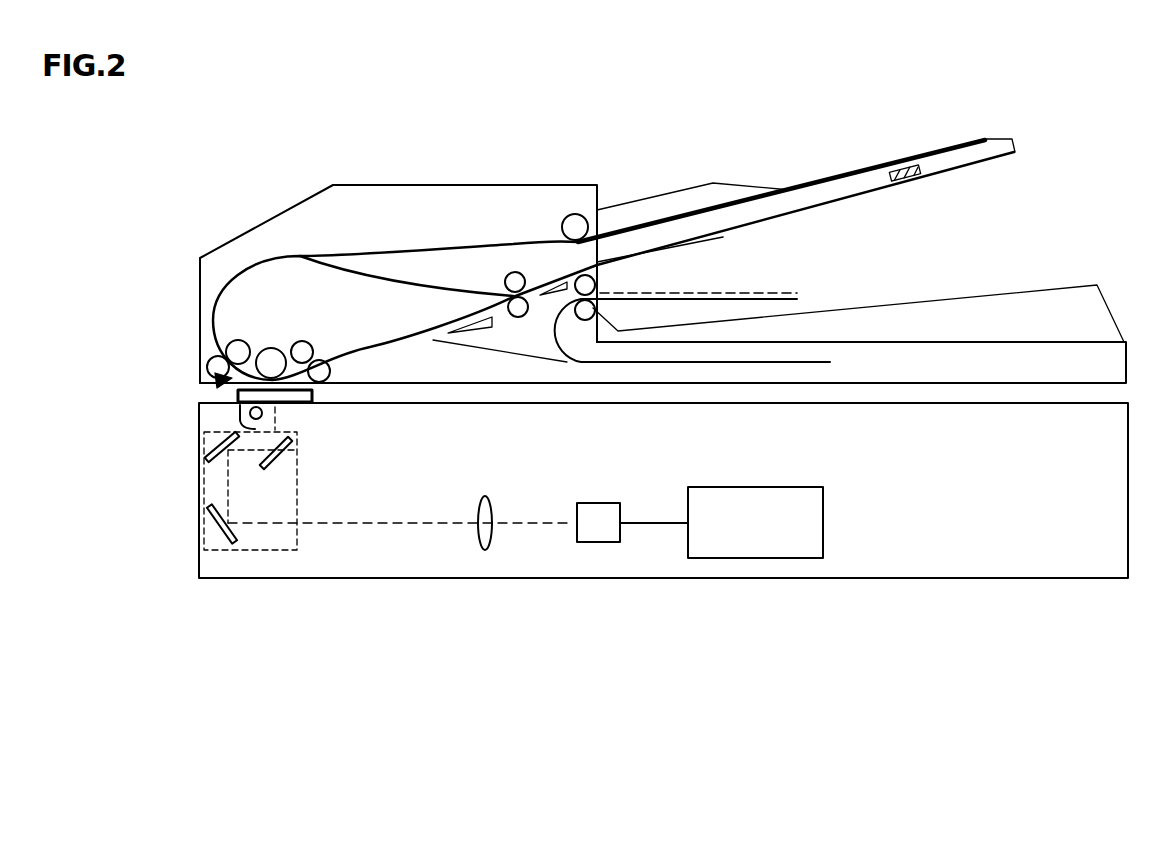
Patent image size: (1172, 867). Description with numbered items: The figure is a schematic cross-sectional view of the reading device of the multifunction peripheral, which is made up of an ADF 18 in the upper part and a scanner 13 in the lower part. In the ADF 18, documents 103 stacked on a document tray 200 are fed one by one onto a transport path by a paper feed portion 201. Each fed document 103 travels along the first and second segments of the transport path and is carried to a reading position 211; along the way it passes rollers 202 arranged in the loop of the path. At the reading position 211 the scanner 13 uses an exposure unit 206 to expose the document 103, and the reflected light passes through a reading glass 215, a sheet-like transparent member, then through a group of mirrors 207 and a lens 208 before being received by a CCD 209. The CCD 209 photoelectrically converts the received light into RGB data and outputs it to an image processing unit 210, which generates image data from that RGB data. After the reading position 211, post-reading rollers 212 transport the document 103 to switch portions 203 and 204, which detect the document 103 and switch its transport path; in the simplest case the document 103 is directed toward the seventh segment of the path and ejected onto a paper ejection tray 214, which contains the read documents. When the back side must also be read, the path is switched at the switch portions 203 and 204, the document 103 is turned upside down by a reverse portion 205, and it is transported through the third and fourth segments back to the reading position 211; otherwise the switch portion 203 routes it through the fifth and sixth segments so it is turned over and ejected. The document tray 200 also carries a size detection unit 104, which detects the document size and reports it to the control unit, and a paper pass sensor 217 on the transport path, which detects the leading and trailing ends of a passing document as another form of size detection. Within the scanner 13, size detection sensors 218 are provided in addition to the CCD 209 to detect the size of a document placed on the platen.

The ADF 18 is at (188, 150).
The scanner 13 is at (146, 490).
The document tray 200 is at (960, 168).
The document 103 is at (892, 162).
The size detection unit 104 is at (910, 182).
The paper ejection tray 214 is at (1058, 287).
The paper feed portion 201 is at (574, 212).
The conveyance roller 202 is at (270, 350).
The switch portion 203 is at (488, 296).
The switch portion 204 is at (560, 280).
The reverse portion 205 is at (586, 270).
The post-reading rollers 212 is at (335, 355).
The paper pass sensor 217 is at (206, 365).
The reading glass 215 is at (237, 397).
The exposure unit 206 is at (232, 418).
The reading position 211 is at (275, 418).
The group of mirrors 207 is at (205, 540).
The lens 208 is at (485, 550).
The CCD 209 is at (598, 542).
The image processing unit 210 is at (763, 487).
The size detection sensor 218 is at (263, 548).